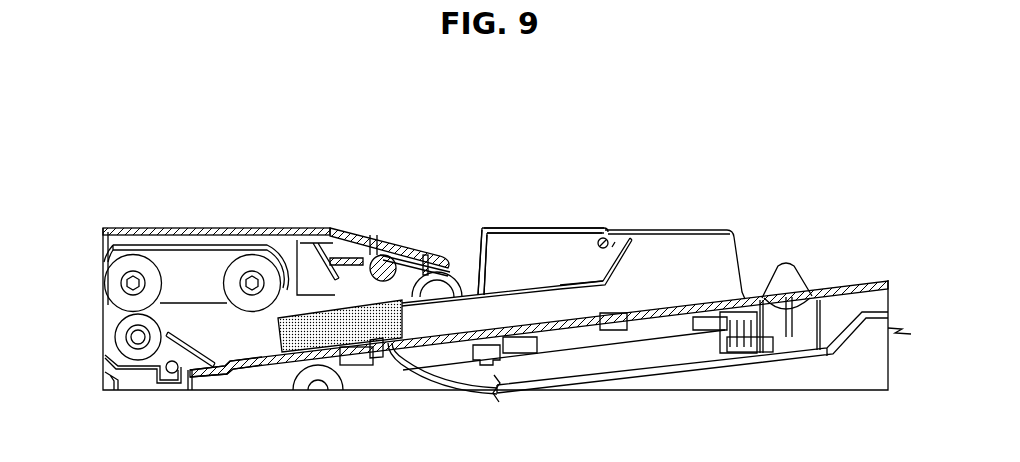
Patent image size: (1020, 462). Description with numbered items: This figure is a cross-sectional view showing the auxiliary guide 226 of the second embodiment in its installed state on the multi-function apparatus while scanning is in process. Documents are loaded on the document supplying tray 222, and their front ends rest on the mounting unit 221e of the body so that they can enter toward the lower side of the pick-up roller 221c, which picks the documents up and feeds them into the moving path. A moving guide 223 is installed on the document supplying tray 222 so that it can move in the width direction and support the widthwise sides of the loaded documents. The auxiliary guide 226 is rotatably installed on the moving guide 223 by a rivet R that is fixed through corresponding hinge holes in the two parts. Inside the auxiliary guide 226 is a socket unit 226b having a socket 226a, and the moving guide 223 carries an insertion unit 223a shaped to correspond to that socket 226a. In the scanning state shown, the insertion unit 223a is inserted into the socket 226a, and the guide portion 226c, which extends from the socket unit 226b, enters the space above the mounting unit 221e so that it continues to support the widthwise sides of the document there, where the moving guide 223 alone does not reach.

The pick-up roller 221c is at (249, 262).
The mounting unit 221e is at (255, 352).
The document supplying tray 222 is at (854, 280).
The moving guide 223 is at (708, 245).
The insertion unit 223a is at (573, 248).
The auxiliary guide 226 is at (546, 228).
The socket 226a is at (533, 238).
The socket unit 226b is at (472, 247).
The guide portion 226c is at (337, 330).
The rivet R is at (608, 236).